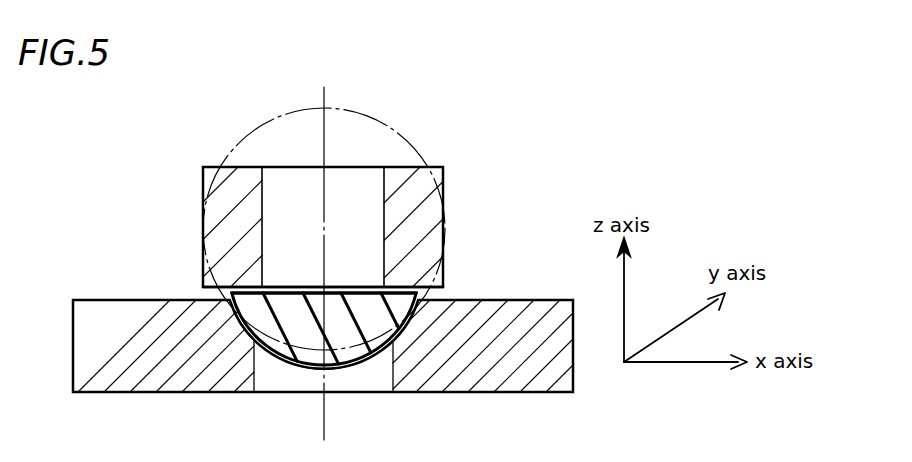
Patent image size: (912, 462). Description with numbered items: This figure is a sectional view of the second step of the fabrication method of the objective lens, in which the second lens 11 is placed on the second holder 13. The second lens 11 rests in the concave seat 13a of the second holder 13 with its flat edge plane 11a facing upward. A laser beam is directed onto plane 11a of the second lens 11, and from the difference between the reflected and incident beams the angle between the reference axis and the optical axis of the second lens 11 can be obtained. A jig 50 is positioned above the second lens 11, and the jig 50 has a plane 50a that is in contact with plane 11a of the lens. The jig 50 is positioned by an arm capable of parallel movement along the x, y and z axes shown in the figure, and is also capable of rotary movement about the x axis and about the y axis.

The jig 50 is at (430, 208).
The plane 50a is at (214, 290).
The second lens 11 is at (360, 330).
The plane 11a is at (397, 289).
The second holder 13 is at (550, 362).
The spherical seat surface 13a is at (414, 302).